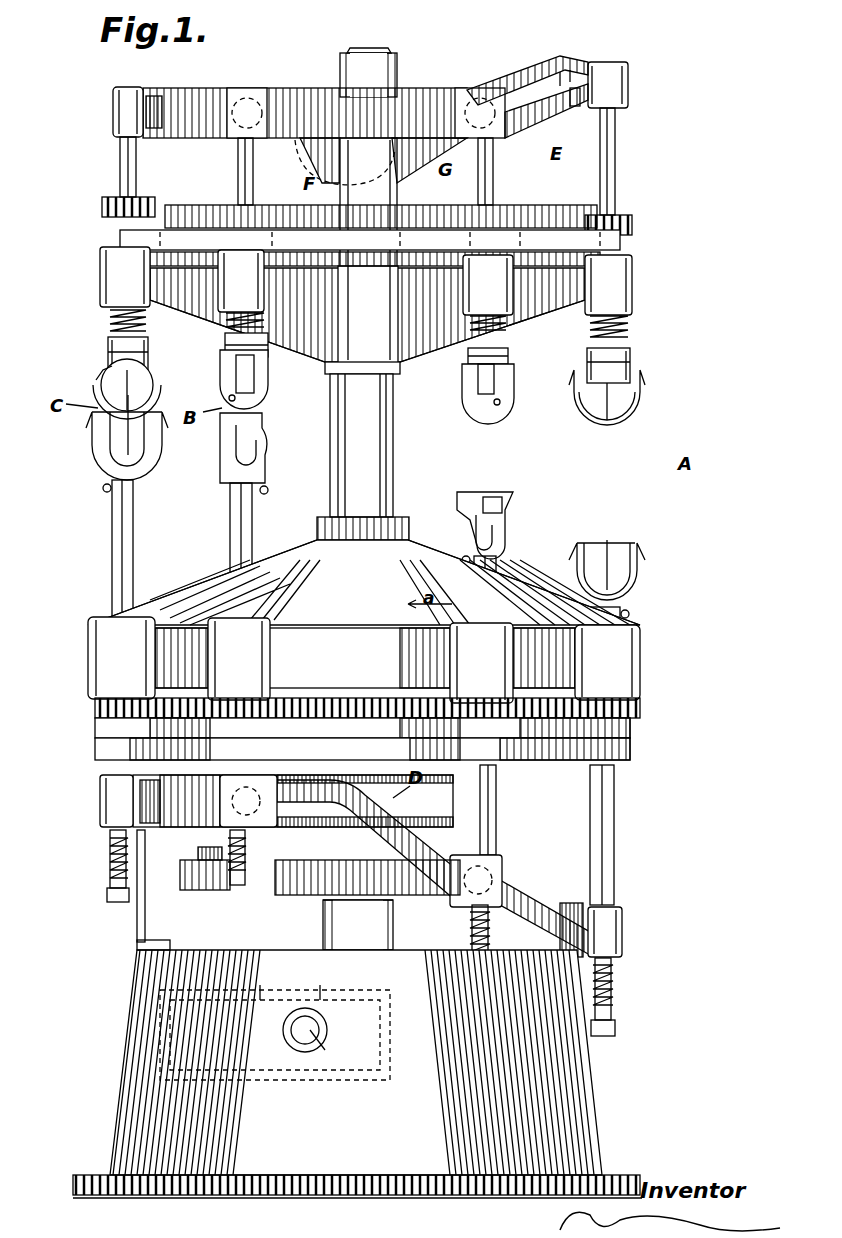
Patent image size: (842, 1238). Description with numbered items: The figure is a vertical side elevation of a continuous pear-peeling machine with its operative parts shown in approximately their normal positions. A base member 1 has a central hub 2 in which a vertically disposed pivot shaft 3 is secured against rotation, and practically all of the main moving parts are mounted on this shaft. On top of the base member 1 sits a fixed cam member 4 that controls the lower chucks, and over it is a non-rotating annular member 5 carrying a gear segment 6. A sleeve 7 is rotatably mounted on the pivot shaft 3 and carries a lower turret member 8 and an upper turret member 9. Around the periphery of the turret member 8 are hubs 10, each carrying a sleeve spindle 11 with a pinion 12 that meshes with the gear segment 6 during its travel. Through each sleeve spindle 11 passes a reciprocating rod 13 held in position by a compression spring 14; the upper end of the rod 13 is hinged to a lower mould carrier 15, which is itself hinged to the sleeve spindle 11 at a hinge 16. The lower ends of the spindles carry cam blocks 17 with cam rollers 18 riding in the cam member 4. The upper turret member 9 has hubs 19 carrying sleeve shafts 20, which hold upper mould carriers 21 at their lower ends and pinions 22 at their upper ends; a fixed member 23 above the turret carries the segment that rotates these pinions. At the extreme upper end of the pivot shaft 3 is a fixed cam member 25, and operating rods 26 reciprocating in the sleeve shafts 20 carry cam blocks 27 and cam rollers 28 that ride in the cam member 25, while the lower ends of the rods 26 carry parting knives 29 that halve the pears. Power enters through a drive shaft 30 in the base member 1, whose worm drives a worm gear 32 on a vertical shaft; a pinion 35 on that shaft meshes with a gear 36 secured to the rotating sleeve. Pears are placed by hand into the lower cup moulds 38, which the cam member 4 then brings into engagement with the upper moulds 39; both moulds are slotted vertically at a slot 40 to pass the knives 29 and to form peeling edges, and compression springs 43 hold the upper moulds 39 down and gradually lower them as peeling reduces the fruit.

The base member 1 is at (570, 1088).
The central hub 2 is at (380, 930).
The pivot shaft 3 is at (384, 51).
The cam member 4 is at (520, 878).
The annular member 5 is at (341, 855).
The gear segment 6 is at (382, 713).
The sleeve 7 is at (378, 462).
The turret member 8 is at (412, 556).
The turret member 9 is at (412, 352).
The hubs 10 is at (110, 657).
The sleeve spindle 11 is at (114, 544).
The pinions 12 is at (98, 709).
The reciprocating rods 13 is at (110, 856).
The compression springs 14 is at (110, 882).
The lower mould carriers 15 is at (150, 458).
The hinge 16 is at (103, 488).
The cam blocks 17 is at (112, 798).
The cam rollers 18 is at (148, 806).
The hubs 19 is at (366, 281).
The sleeve shafts 20 is at (110, 326).
The upper mould carriers 21 is at (149, 358).
The pinions 22 is at (643, 222).
The member 23 is at (431, 214).
The cam member 25 is at (538, 62).
The operating rods 26 is at (132, 164).
The cam blocks 27 is at (116, 110).
The cam rollers 28 is at (153, 96).
The parting knives 29 is at (120, 380).
The drive shaft 30 is at (311, 1039).
The worm gear 32 is at (172, 1027).
The pinion 35 is at (193, 872).
The gear 36 is at (303, 872).
The lower cup moulds 38 is at (110, 428).
The upper moulds 39 is at (144, 400).
The vertical slot 40 is at (108, 446).
The compression springs 43 is at (110, 337).